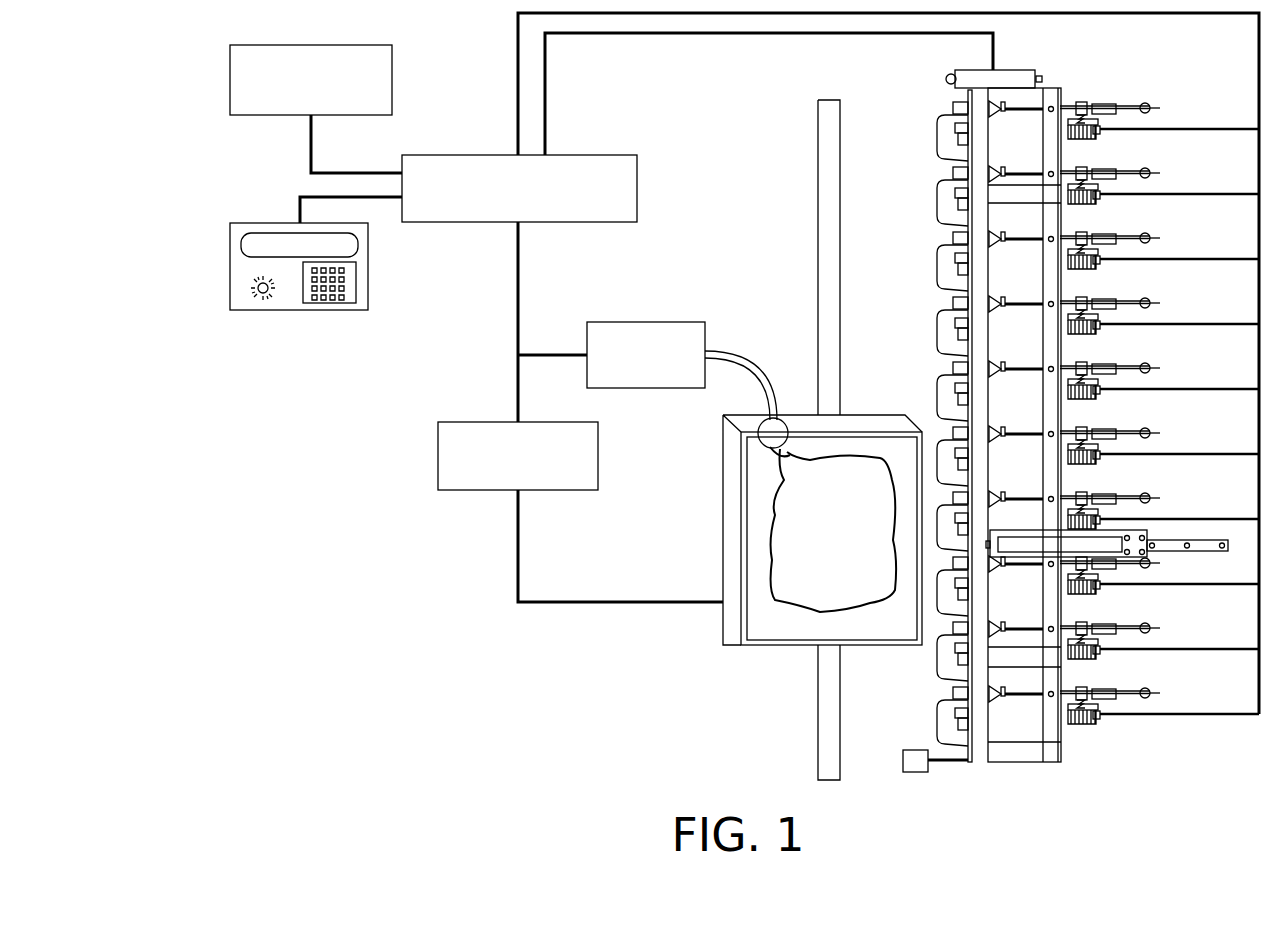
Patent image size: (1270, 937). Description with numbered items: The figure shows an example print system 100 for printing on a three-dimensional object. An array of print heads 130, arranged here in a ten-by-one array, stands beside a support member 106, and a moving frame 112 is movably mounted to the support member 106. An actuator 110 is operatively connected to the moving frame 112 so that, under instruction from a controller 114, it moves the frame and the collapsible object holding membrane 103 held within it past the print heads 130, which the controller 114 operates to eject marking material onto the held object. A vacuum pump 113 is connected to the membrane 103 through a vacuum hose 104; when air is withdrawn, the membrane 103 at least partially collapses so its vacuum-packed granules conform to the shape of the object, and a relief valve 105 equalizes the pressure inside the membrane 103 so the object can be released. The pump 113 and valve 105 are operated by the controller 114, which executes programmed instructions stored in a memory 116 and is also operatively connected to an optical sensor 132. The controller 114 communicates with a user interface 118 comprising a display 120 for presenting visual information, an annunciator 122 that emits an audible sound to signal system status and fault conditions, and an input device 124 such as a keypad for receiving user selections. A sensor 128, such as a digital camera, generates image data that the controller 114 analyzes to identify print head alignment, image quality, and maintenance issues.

The print system 100 is at (358, 671).
The collapsible object holding membrane 103 is at (833, 529).
The vacuum hose 104 is at (745, 360).
The relief valve 105 is at (757, 441).
The support member 106 is at (818, 718).
The actuator 110 is at (481, 493).
The moving frame 112 is at (755, 622).
The vacuum pump 113 is at (665, 322).
The controller 114 is at (593, 155).
The memory 116 is at (230, 80).
The user interface 118 is at (292, 310).
The display 120 is at (308, 277).
The annunciator 122 is at (251, 292).
The input device 124 is at (338, 303).
The sensor 128 is at (918, 773).
The print heads 130 is at (918, 231).
The optical sensor 132 is at (1025, 70).